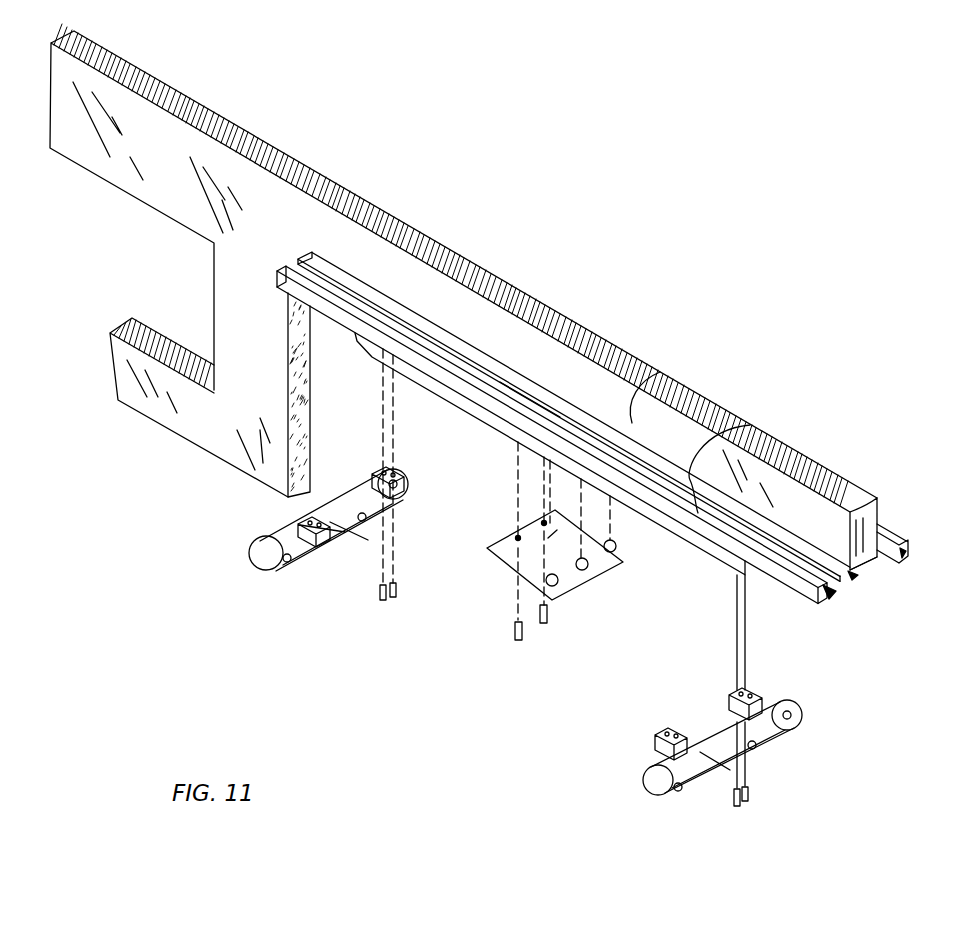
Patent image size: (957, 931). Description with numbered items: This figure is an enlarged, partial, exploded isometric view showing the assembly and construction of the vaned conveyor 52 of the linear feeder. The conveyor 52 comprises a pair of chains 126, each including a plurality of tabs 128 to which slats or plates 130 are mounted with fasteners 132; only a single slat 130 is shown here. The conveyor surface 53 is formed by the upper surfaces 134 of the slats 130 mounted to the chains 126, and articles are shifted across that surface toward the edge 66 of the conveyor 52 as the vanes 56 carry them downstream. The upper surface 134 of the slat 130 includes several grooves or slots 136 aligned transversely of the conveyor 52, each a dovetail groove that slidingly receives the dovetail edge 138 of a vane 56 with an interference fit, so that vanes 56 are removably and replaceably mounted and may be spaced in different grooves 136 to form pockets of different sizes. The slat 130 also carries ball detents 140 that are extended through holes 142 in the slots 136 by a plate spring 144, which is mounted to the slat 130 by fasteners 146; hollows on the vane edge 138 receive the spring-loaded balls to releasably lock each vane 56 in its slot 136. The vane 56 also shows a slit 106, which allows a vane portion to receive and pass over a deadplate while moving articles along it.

The conveyor 52 is at (752, 596).
The conveyor surface 53 is at (893, 528).
The vane 56 is at (148, 130).
The edge of conveyor 66 is at (277, 265).
The slit 106 is at (124, 290).
The chain 126 is at (277, 530).
The tab 128 is at (373, 478).
The slat 130 is at (680, 525).
The fastener 132 is at (397, 598).
The upper surface of slat 134 is at (750, 425).
The groove or slot 136 is at (838, 601).
The vane edge 138 is at (863, 578).
The ball detent 140 is at (556, 587).
The hole 142 is at (556, 417).
The plate spring 144 is at (487, 550).
The fastener 146 is at (519, 642).